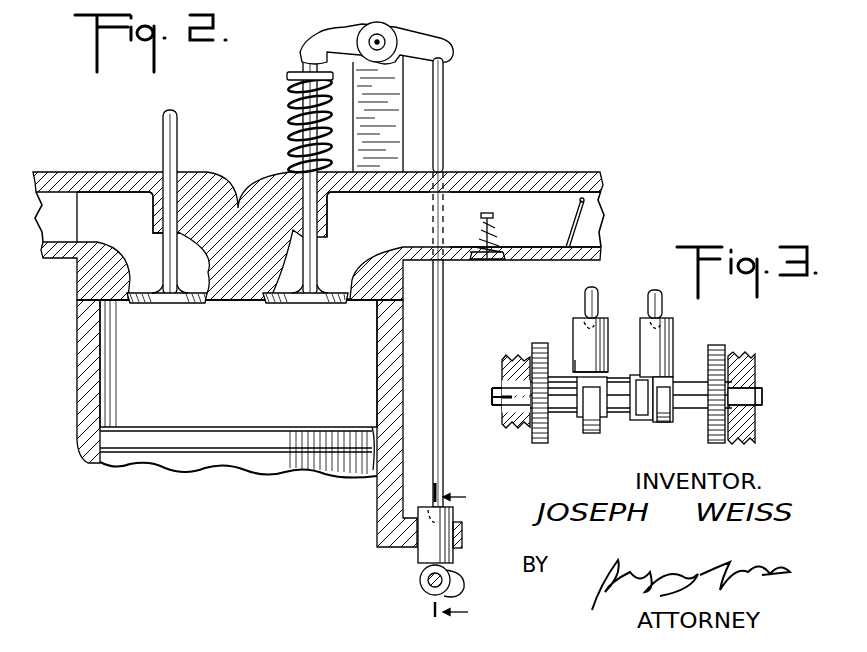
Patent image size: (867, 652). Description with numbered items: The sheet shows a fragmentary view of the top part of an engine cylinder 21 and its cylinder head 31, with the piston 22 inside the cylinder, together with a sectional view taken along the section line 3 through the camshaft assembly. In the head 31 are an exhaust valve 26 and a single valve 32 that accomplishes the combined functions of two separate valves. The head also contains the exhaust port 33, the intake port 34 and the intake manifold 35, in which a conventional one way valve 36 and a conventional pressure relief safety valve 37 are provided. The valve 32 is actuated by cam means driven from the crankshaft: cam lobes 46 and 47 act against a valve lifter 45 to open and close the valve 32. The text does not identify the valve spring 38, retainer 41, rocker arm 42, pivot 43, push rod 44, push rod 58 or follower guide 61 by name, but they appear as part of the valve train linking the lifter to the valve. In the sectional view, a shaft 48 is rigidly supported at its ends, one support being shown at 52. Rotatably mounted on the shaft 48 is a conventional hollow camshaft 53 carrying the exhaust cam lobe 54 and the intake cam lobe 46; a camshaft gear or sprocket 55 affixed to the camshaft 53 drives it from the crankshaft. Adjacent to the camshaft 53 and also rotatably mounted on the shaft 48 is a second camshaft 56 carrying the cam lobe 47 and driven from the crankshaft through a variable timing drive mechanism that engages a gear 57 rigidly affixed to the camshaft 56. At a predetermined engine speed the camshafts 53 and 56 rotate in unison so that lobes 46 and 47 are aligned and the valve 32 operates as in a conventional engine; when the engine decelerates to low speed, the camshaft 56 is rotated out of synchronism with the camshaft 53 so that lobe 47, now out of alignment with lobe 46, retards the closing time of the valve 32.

In FIG. 2, the section line 3 is at (459, 553).
In FIG. 2, the engine cylinder 21 is at (83, 377).
In FIG. 2, the piston 22 is at (162, 458).
In FIG. 2, the exhaust valve 26 is at (160, 302).
In FIG. 2, the cylinder head 31 is at (77, 270).
In FIG. 2, the single valve 32 is at (293, 302).
In FIG. 2, the exhaust port 33 is at (131, 233).
In FIG. 2, the intake port 34 is at (377, 235).
In FIG. 2, the intake manifold 35 is at (544, 226).
In FIG. 2, the one way valve 36 is at (583, 222).
In FIG. 2, the pressure relief safety valve 37 is at (487, 260).
In FIG. 2, the valve spring 38 is at (290, 113).
In FIG. 2, the spring retainer 41 is at (292, 76).
In FIG. 2, the rocker arm 42 is at (452, 50).
In FIG. 2, the rocker arm pivot 43 is at (384, 42).
In FIG. 2, the push rod 44 is at (443, 460).
In FIG. 3, the push rod 44 is at (658, 303).
In FIG. 2, the valve lifter 45 is at (425, 550).
In FIG. 3, the valve lifter 45 is at (673, 346).
In FIG. 2, the intake cam lobe 46 is at (458, 573).
In FIG. 3, the intake cam lobe 46 is at (643, 402).
In FIG. 2, the cam lobe 47 is at (452, 597).
In FIG. 3, the cam lobe 47 is at (662, 421).
In FIG. 3, the shaft 48 is at (760, 397).
In FIG. 3, the shaft support 52 is at (500, 401).
In FIG. 3, the hollow camshaft 53 is at (573, 378).
In FIG. 3, the exhaust cam lobe 54 is at (586, 432).
In FIG. 3, the camshaft gear 55 is at (537, 439).
In FIG. 3, the camshaft 56 is at (692, 381).
In FIG. 3, the gear 57 is at (719, 345).
In FIG. 3, the push rod 58 is at (597, 298).
In FIG. 3, the follower guide 61 is at (609, 338).